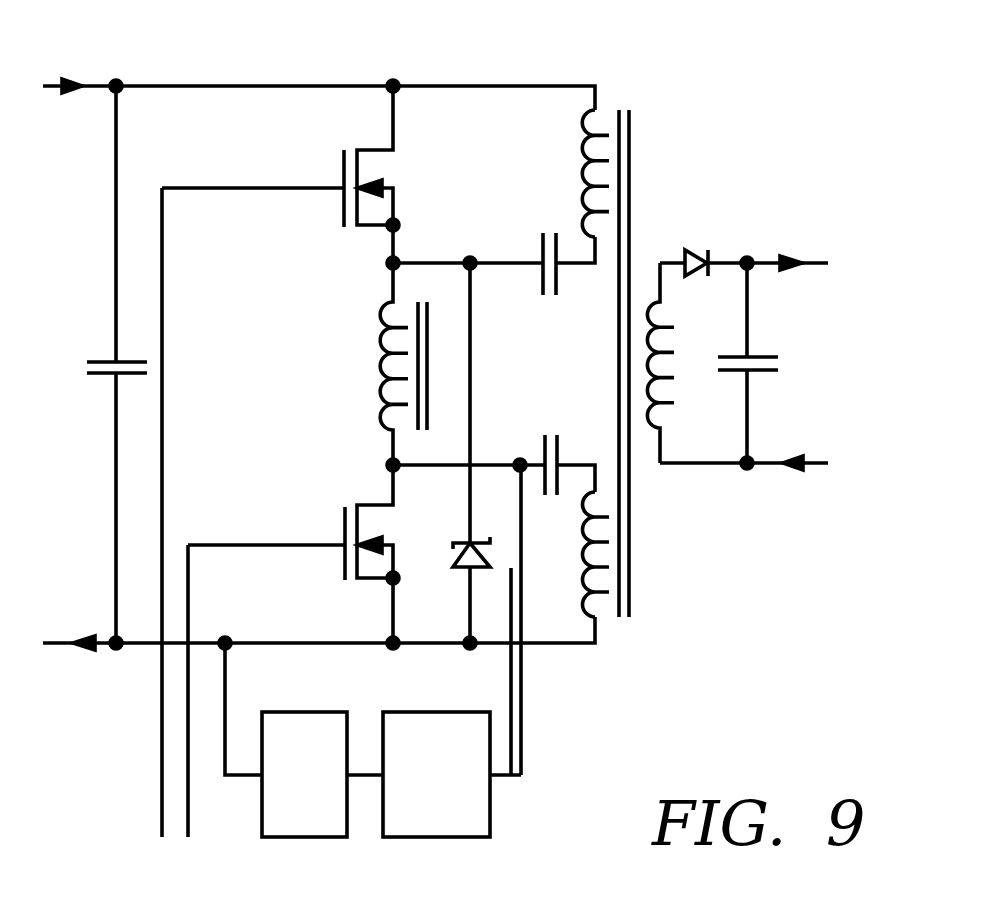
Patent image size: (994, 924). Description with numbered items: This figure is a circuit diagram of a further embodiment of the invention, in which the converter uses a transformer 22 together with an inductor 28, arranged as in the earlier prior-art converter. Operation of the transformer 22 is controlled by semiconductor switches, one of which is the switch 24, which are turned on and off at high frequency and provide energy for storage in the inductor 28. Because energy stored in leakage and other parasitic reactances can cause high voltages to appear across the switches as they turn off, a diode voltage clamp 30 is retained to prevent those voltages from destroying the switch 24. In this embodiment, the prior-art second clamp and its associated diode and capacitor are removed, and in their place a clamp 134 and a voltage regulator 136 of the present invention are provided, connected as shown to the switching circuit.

The transformer 22 is at (642, 263).
The semiconductor switch 24 is at (378, 170).
The inductor 28 is at (382, 360).
The diode voltage clamp 30 is at (458, 557).
The clamp 134 is at (422, 838).
The voltage regulator 136 is at (308, 838).